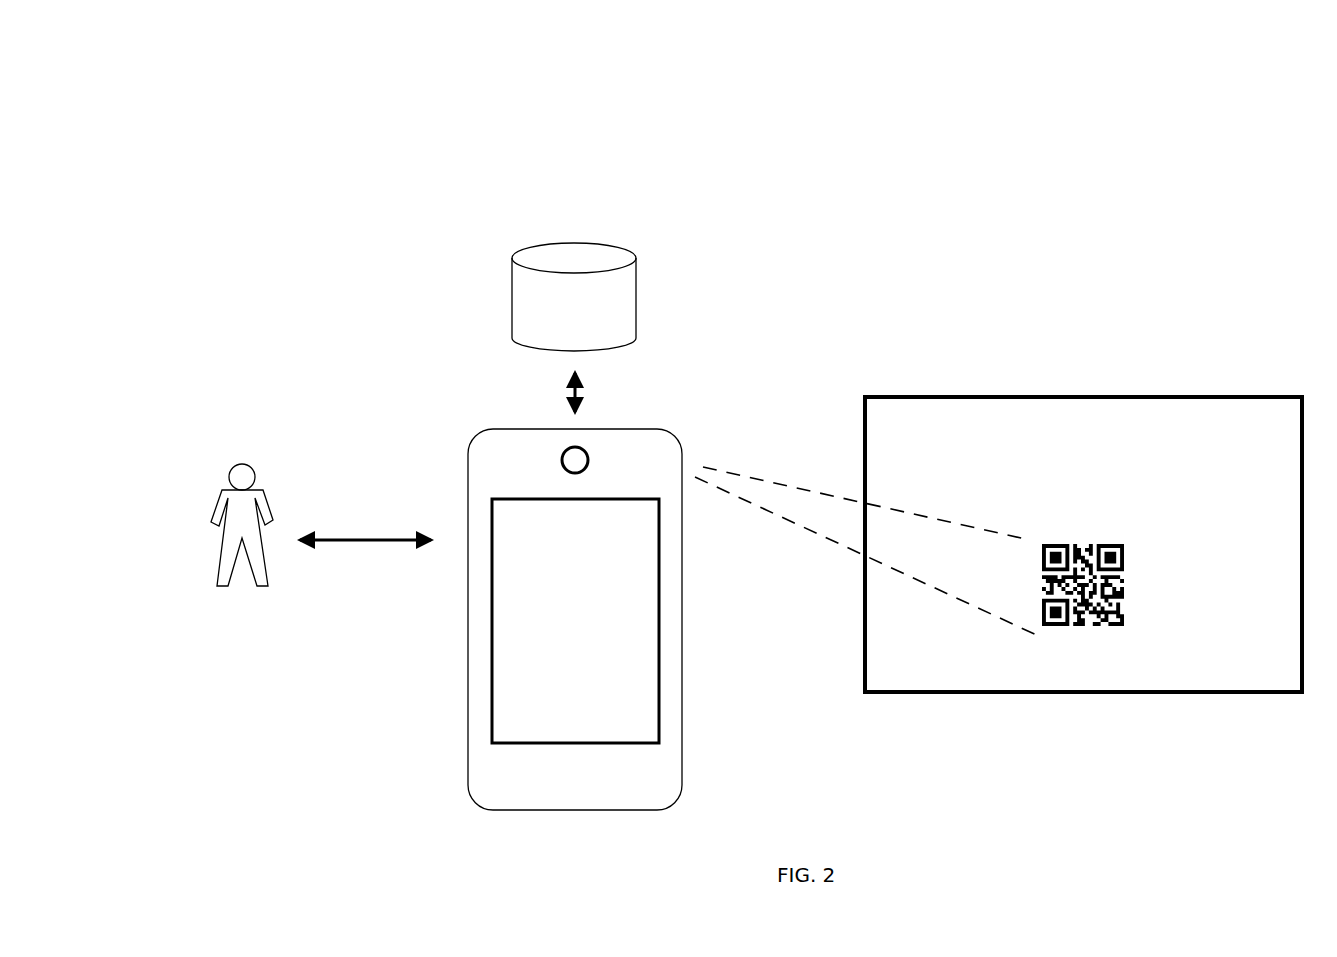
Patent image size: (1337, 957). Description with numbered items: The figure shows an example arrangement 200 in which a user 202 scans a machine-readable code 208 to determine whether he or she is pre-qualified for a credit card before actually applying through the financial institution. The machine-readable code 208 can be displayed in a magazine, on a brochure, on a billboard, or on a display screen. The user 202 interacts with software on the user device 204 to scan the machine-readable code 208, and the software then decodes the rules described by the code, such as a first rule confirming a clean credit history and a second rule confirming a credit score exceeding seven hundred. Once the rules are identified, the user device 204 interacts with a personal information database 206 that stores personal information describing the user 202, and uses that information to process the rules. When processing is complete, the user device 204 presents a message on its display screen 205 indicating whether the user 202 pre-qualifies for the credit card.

The system environment 200 is at (206, 75).
The user 202 is at (208, 488).
The user device 204 is at (614, 616).
The display screen 205 is at (667, 585).
The personal information database 206 is at (532, 247).
The machine-readable code 208 is at (1145, 540).